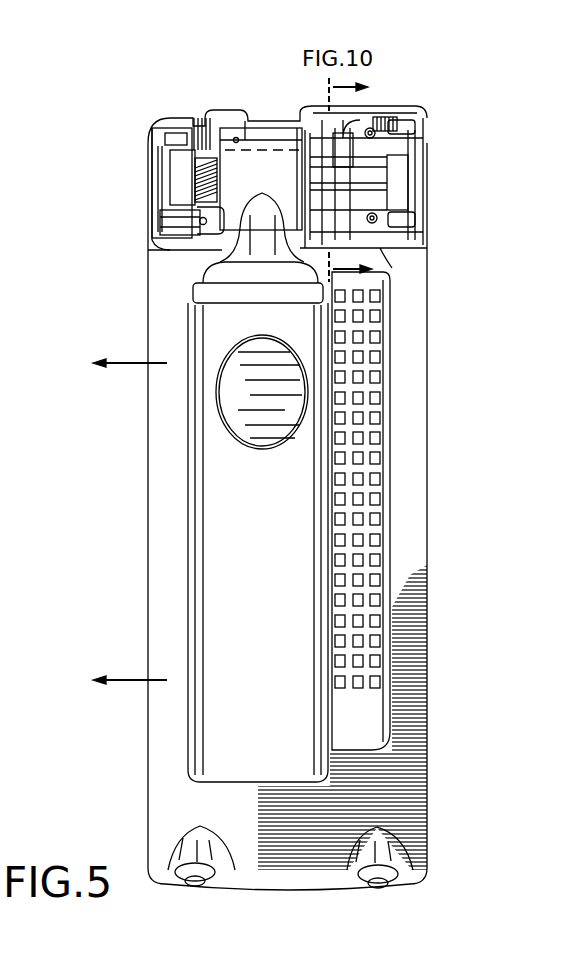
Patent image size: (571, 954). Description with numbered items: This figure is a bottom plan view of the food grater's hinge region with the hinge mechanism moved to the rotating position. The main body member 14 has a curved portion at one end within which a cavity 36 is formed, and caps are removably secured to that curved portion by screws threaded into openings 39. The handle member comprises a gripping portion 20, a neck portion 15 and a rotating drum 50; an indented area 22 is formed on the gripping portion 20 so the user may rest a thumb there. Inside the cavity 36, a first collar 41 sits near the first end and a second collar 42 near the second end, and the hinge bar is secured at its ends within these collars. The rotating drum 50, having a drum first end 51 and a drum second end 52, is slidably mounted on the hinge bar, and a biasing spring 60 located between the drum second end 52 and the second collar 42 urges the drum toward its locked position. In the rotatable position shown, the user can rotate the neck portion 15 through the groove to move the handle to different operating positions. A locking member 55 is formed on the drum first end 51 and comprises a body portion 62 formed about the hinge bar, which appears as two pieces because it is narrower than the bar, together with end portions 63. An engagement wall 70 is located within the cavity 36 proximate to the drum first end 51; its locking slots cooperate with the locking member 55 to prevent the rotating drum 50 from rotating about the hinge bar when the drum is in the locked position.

The main body member 14 is at (415, 778).
The neck portion 15 is at (205, 247).
The gripping portion 20 is at (303, 590).
The indented area 22 is at (282, 398).
The cavity 36 is at (195, 200).
The openings 39 is at (213, 135).
The first collar 41 is at (410, 165).
The second collar 42 is at (177, 173).
The rotating drum 50 is at (237, 140).
The drum first end 51 is at (392, 268).
The drum second end 52 is at (203, 135).
The locking member 55 is at (372, 135).
The biasing spring 60 is at (153, 131).
The body portion 62 is at (385, 124).
The end portions 63 is at (297, 133).
The engagement wall 70 is at (343, 130).